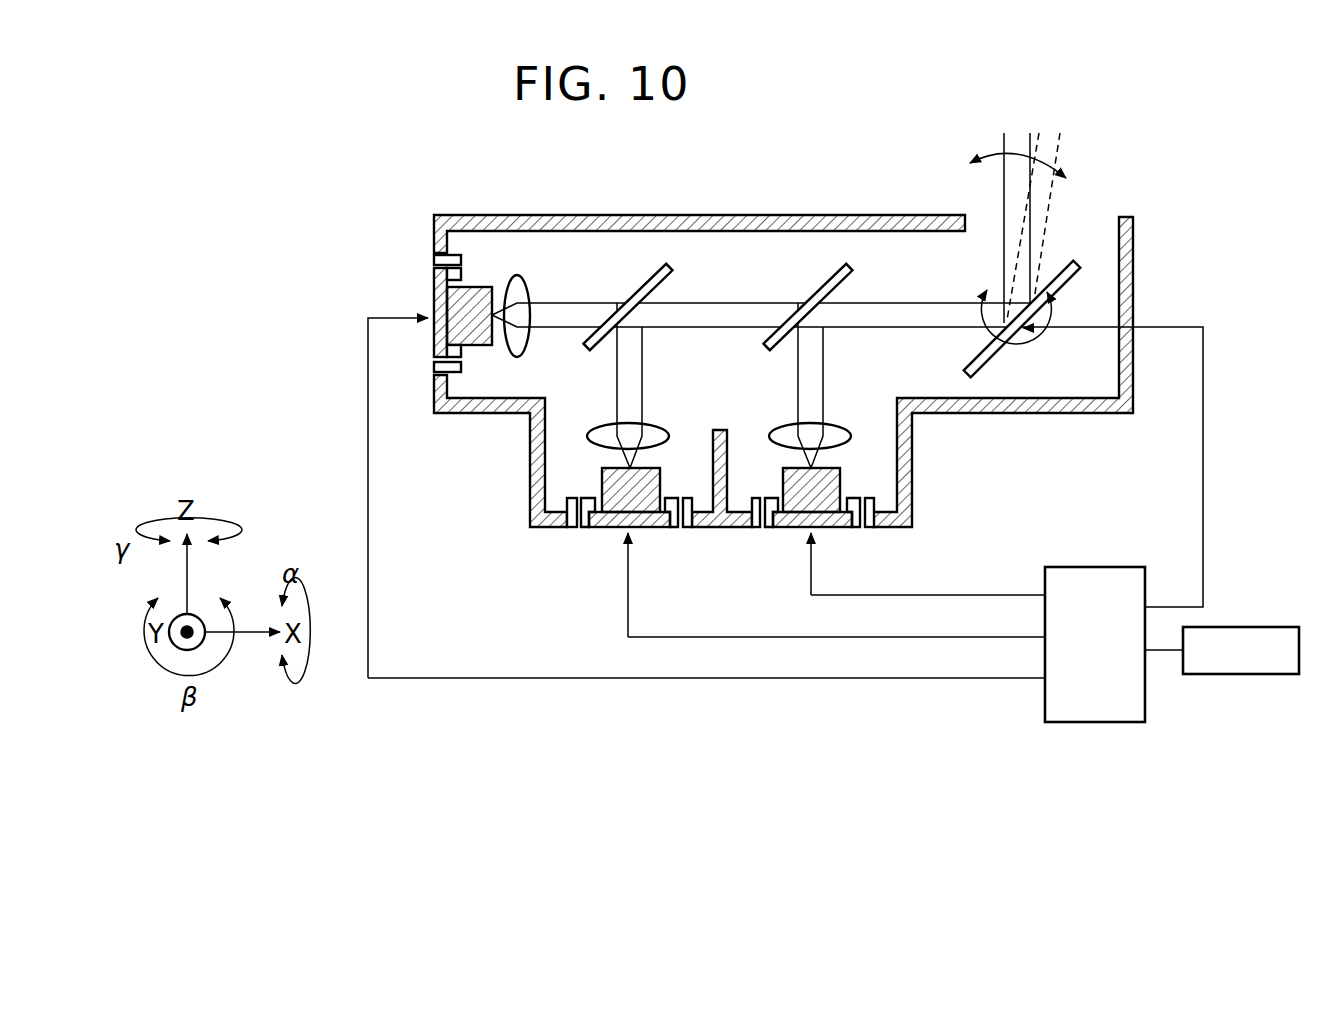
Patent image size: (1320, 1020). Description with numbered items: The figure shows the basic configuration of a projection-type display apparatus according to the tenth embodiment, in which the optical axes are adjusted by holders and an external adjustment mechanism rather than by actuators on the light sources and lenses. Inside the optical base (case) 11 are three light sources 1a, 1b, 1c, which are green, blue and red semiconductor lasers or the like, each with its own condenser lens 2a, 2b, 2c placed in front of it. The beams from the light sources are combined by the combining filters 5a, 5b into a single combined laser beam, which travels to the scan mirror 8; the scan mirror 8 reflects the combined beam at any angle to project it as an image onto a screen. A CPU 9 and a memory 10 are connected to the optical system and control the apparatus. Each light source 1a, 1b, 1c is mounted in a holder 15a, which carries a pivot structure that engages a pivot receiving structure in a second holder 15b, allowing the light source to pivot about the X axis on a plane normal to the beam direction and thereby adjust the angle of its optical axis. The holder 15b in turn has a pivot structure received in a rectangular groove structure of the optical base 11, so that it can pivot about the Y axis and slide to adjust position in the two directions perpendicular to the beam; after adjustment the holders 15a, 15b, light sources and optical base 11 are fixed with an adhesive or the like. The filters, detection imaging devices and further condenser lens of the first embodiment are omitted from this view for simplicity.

The light source 1a is at (432, 292).
The light source 1b is at (610, 529).
The light source 1c is at (832, 529).
The condenser lens 2a is at (528, 282).
The condenser lens 2b is at (653, 424).
The condenser lens 2c is at (842, 424).
The combining filter 5a is at (675, 273).
The combining filter 5b is at (850, 273).
The scan mirror 8 is at (977, 351).
The CPU 9 is at (1090, 723).
The memory 10 is at (1228, 675).
The optical base (case) 11 is at (738, 212).
The holder 15a is at (433, 362).
The holder 15b is at (433, 373).